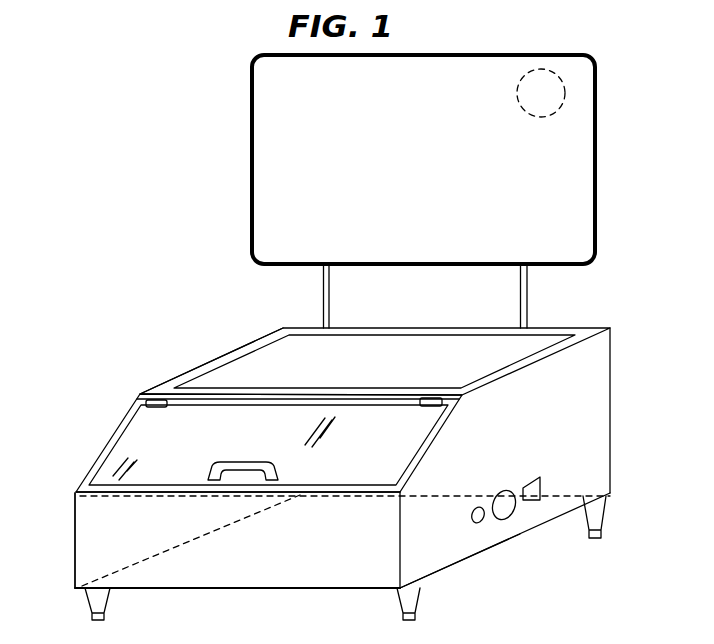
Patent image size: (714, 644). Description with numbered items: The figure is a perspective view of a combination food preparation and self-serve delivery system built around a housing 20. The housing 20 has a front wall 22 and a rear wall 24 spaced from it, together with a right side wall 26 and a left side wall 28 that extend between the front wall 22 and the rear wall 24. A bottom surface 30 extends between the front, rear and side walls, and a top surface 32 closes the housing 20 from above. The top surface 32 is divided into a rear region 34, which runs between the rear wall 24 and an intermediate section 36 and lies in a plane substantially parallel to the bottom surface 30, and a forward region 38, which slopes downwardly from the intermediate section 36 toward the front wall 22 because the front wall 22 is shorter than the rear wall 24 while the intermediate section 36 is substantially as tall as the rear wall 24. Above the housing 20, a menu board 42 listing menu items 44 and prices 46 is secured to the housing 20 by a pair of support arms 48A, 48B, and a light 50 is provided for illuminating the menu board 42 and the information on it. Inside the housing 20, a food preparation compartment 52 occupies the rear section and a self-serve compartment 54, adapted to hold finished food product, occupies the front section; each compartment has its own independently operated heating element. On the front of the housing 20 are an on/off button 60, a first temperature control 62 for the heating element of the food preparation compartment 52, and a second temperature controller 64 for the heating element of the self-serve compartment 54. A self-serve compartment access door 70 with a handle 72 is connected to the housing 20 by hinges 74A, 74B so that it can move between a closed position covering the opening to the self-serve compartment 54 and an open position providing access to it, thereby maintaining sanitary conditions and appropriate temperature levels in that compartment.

The housing 20 is at (630, 352).
The front wall 22 is at (195, 578).
The rear wall 24 is at (610, 428).
The right side wall 26 is at (420, 562).
The left side wall 28 is at (75, 522).
The bottom surface 30 is at (300, 588).
The top surface 32 is at (217, 359).
The rear region 34 is at (375, 339).
The intermediate section 36 is at (192, 403).
The forward region 38 is at (239, 467).
The menu board 42 is at (252, 155).
The menu items 44 is at (386, 162).
The prices 46 is at (386, 222).
The support arm 48A is at (329, 302).
The support arm 48B is at (527, 302).
The light 50 is at (565, 97).
The food preparation compartment 52 is at (361, 367).
The self-serve compartment 54 is at (333, 473).
The on/off button 60 is at (540, 500).
The first temperature control 62 is at (508, 520).
The second temperature controller 64 is at (478, 524).
The self-serve compartment access door 70 is at (138, 493).
The handle 72 is at (249, 461).
The hinge 74A is at (153, 392).
The hinge 74B is at (432, 397).